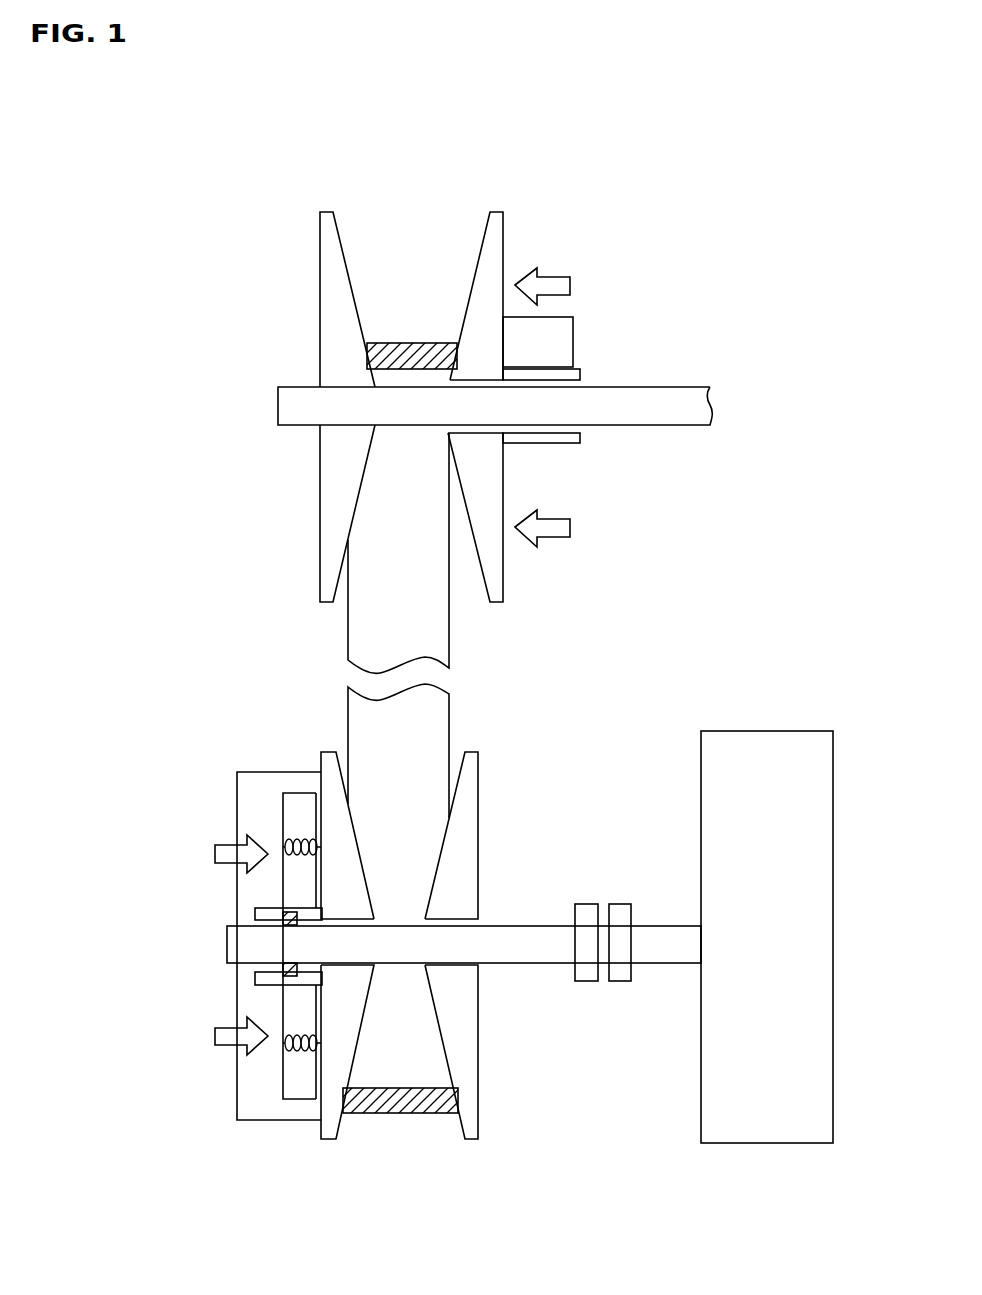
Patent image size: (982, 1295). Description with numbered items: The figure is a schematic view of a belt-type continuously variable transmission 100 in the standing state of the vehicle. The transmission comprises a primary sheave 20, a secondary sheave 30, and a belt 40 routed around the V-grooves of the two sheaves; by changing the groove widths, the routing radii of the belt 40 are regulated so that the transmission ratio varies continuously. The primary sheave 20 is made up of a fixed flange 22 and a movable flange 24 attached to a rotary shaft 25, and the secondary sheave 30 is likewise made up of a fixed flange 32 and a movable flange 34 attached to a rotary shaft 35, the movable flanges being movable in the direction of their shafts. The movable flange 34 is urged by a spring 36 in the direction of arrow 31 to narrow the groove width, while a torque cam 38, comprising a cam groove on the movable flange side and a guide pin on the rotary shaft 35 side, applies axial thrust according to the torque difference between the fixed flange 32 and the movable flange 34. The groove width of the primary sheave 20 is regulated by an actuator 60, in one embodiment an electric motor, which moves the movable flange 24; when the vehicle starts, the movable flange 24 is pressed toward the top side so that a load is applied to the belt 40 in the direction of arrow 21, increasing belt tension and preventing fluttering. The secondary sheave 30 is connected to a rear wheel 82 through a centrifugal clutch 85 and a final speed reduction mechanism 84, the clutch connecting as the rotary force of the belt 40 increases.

The continuously variable transmission 100 is at (652, 203).
The primary sheave 20 is at (287, 281).
The arrow 21 is at (555, 277).
The fixed flange 22 is at (320, 535).
The movable flange 24 is at (503, 562).
The rotary shaft 25 is at (645, 387).
The belt 40 is at (412, 343).
The actuator 60 is at (573, 327).
The secondary sheave 30 is at (510, 1067).
The arrow 31 is at (224, 843).
The fixed flange 32 is at (479, 798).
The movable flange 34 is at (321, 768).
The rotary shaft 35 is at (531, 925).
The spring 36 is at (296, 838).
The torque cam 38 is at (255, 909).
The rear wheel 82 is at (787, 731).
The final speed reduction mechanism 84 is at (622, 904).
The centrifugal clutch 85 is at (268, 1120).